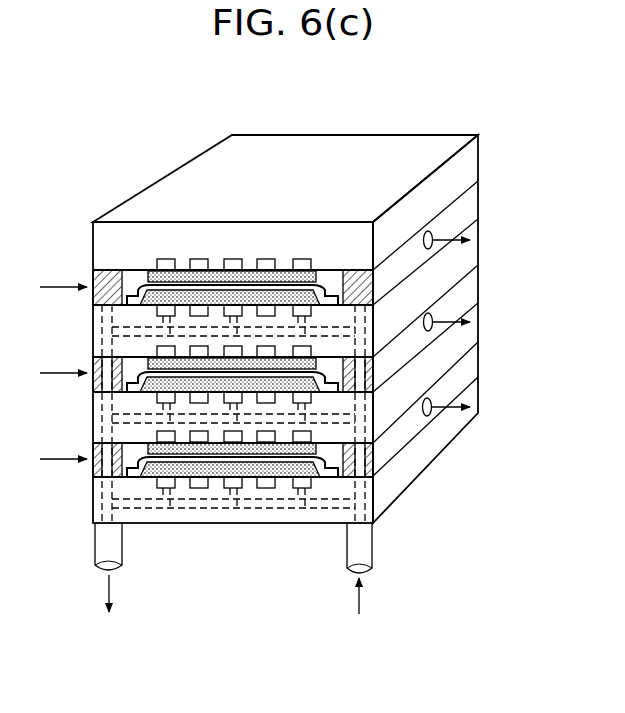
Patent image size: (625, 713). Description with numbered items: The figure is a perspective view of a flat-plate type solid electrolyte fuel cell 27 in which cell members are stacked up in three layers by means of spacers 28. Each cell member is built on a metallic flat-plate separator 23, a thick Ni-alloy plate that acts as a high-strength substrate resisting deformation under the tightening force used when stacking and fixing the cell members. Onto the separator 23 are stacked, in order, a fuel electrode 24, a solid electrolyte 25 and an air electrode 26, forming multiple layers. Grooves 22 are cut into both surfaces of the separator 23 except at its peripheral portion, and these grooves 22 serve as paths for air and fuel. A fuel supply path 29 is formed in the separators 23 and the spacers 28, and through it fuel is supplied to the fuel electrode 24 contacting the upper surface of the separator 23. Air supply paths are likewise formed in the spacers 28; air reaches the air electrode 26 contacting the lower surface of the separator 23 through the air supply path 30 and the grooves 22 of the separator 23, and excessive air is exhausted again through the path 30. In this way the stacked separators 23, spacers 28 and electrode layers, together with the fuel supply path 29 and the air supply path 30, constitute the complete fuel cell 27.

The grooves 22 is at (303, 260).
The metallic flat-plate separator 23 is at (479, 156).
The fuel electrode 24 is at (218, 295).
The solid electrolyte 25 is at (180, 284).
The air electrode 26 is at (287, 271).
The fuel cell 27 is at (310, 133).
The spacers 28 is at (479, 192).
The fuel supply path 29 is at (364, 548).
The air supply path 30 is at (431, 236).